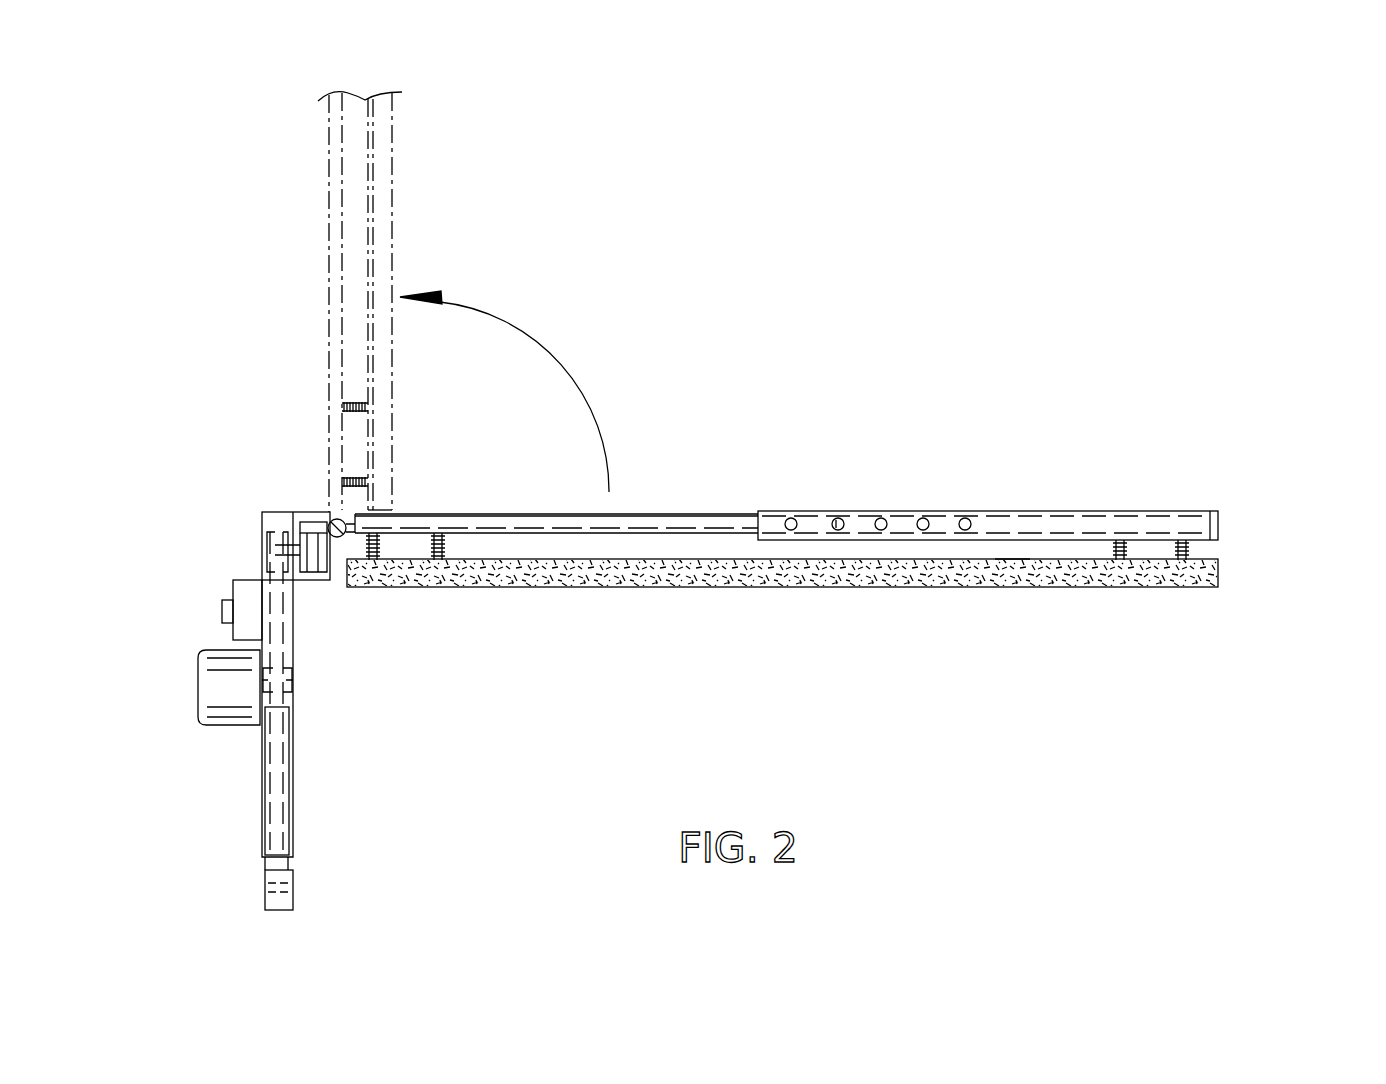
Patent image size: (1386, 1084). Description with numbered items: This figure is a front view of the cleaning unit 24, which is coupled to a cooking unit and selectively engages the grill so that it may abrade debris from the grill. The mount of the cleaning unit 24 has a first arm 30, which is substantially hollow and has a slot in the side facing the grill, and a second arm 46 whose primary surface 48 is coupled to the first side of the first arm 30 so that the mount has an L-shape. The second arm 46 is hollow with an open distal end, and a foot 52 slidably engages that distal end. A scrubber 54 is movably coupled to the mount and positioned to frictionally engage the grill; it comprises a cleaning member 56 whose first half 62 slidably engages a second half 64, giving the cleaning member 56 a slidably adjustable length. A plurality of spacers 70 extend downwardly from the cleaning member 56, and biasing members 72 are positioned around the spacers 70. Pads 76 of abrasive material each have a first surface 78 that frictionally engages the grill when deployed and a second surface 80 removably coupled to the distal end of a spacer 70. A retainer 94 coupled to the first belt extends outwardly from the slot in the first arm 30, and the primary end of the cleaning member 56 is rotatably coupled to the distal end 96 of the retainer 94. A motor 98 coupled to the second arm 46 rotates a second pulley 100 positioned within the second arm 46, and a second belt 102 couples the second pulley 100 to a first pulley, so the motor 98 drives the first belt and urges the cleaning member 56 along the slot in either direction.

The cleaning unit 24 is at (757, 478).
The first arm 30 is at (300, 512).
The second arm 46 is at (261, 787).
The primary surface 48 is at (288, 753).
The foot 52 is at (293, 903).
The scrubber 54 is at (792, 503).
The cleaning member 56 is at (712, 514).
The first half 62 is at (518, 513).
The second half 64 is at (1068, 511).
The spacers 70 is at (1180, 552).
The biasing members 72 is at (437, 540).
The pads 76 is at (1218, 583).
The first surface 78 is at (1050, 587).
The second surface 80 is at (1012, 559).
The retainer 94 is at (311, 522).
The distal end 96 is at (337, 540).
The motor 98 is at (222, 650).
The second pulley 100 is at (290, 672).
The second belt 102 is at (270, 600).